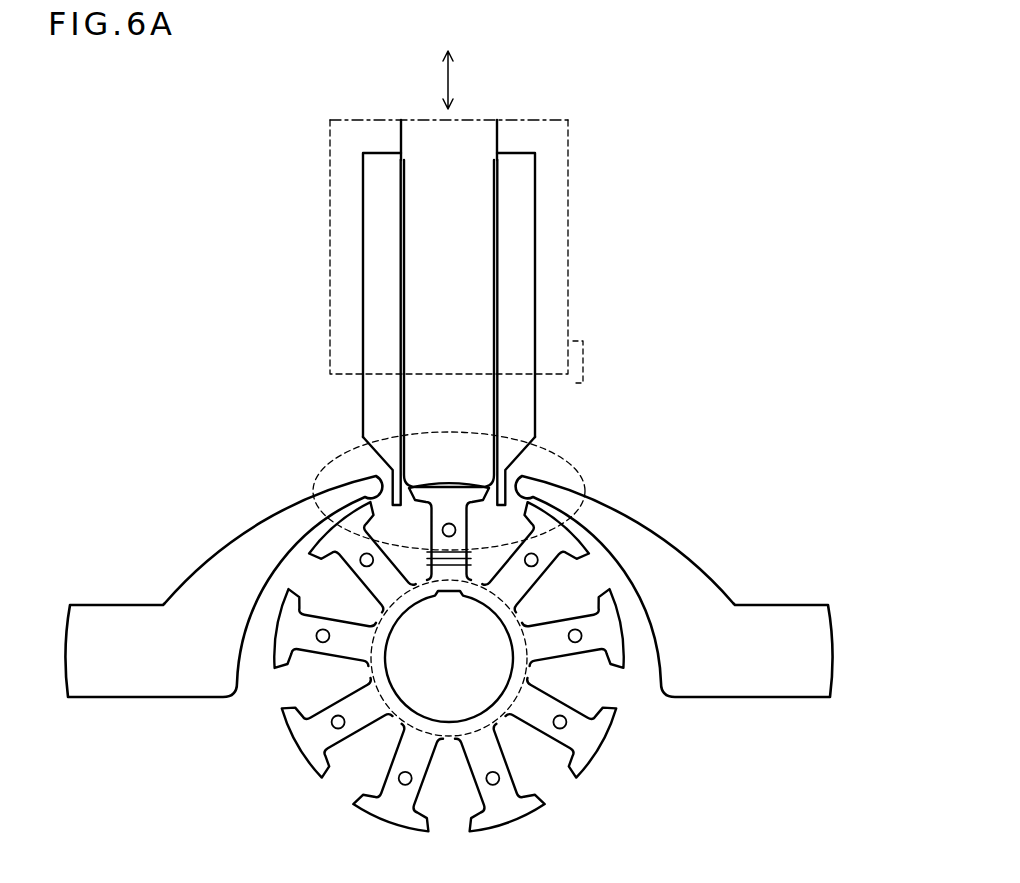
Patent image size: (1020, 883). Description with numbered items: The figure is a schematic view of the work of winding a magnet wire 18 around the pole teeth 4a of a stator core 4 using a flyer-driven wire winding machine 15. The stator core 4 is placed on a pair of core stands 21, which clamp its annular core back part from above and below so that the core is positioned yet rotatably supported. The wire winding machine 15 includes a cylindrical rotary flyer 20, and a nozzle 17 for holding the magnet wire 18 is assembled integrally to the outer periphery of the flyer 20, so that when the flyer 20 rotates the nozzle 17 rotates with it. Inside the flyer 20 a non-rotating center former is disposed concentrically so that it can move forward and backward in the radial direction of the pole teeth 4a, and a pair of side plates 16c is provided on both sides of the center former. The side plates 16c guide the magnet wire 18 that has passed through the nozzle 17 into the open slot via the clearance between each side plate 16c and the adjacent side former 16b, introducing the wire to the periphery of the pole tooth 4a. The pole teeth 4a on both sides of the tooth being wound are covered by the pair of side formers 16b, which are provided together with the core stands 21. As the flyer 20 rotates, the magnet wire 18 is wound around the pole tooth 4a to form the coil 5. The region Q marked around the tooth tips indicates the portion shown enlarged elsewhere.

The wire winding machine 15 is at (350, 113).
The flyer 20 is at (568, 148).
The side plate 16c is at (362, 245).
The nozzle 17 is at (583, 360).
The magnet wire 18 is at (510, 484).
The side former 16b is at (313, 496).
The region Q is at (350, 446).
The stator core 4 is at (276, 740).
The pole tooth 4a is at (610, 722).
The core stand 21 is at (508, 722).
The coil 5 is at (428, 563).